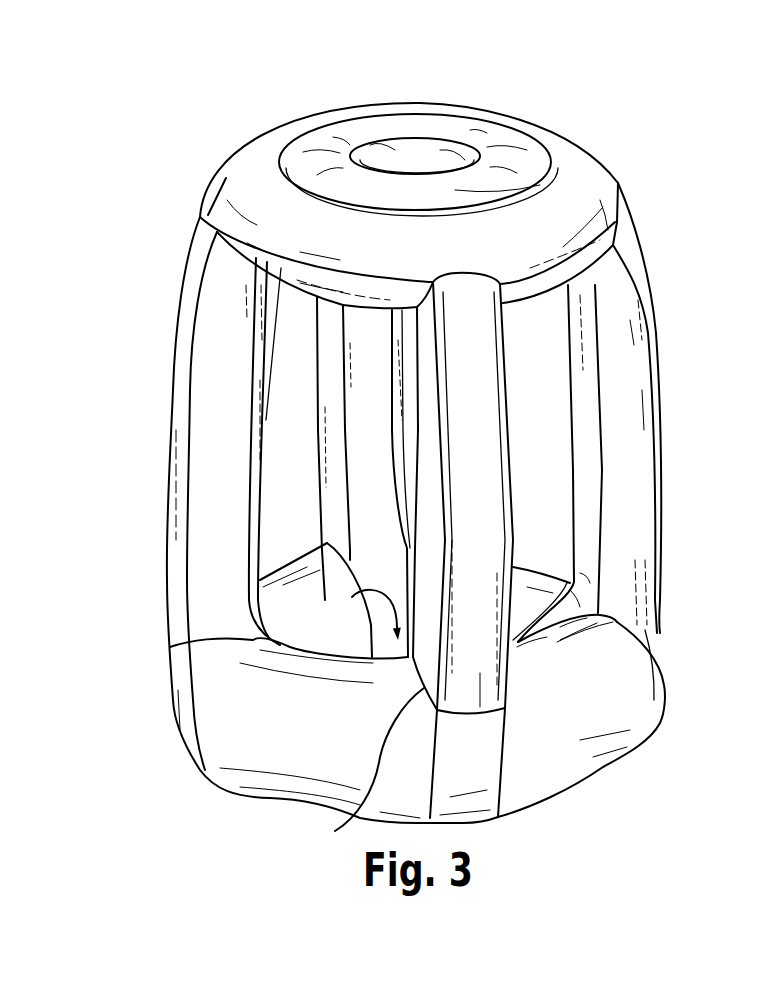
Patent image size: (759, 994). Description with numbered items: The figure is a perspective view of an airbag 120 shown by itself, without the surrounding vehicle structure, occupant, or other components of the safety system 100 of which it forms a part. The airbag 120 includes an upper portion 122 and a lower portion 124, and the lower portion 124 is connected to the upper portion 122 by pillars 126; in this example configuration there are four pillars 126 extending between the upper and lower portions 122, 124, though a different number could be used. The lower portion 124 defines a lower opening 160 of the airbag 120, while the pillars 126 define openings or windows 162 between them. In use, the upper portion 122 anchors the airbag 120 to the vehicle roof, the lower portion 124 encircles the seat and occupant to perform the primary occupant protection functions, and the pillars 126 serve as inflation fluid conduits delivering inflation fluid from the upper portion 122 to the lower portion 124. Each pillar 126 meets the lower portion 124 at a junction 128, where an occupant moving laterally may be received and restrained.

The beverage container holder / stand 100 is at (214, 122).
The airbag 120 is at (289, 93).
The upper portion 122 is at (537, 135).
The lower portion 124 is at (268, 747).
The pillars 126 is at (368, 357).
The junction 128 is at (257, 636).
The lower opening 160 is at (350, 537).
The windows 162 is at (275, 441).